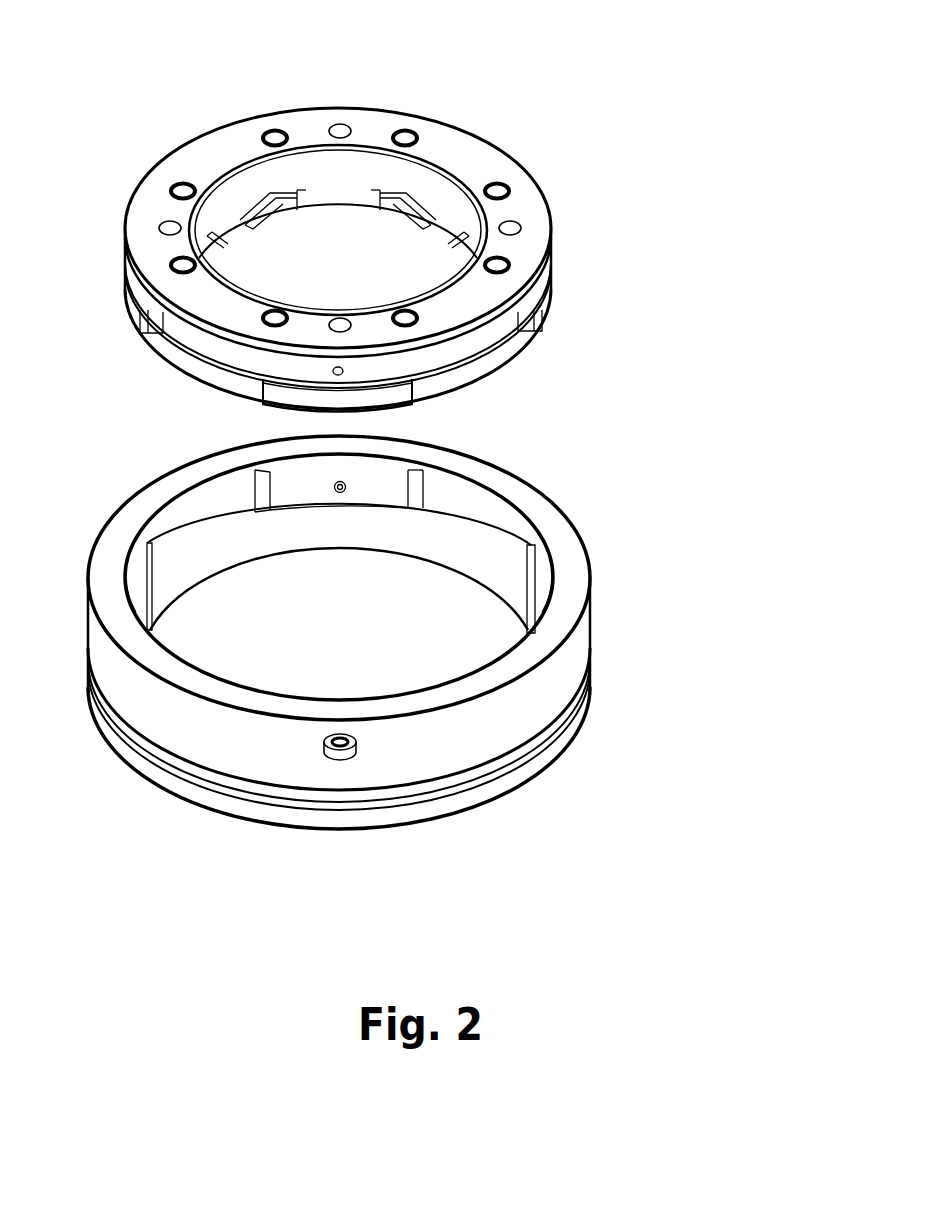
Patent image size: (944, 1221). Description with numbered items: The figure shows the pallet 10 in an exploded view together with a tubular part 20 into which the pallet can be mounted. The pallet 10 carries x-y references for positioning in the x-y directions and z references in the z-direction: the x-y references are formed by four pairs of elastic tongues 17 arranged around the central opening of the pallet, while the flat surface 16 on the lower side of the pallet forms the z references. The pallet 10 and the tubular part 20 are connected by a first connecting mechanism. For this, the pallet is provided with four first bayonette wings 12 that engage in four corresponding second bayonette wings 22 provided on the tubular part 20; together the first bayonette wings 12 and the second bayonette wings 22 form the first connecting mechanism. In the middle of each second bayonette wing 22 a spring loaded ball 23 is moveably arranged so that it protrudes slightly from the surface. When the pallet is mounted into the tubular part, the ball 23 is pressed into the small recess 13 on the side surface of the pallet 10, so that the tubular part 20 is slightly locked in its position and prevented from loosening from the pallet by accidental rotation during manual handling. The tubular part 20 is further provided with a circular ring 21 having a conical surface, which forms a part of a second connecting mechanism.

The pallet 10 is at (538, 177).
The first bayonette wings 12 is at (262, 404).
The small recess 13 is at (352, 372).
The flat surface 16 is at (345, 188).
The elastic tongues 17 is at (432, 237).
The tubular part 20 is at (607, 567).
The circular ring 21 is at (497, 783).
The second bayonette wings 22 is at (389, 493).
The spring loaded ball 23 is at (352, 497).